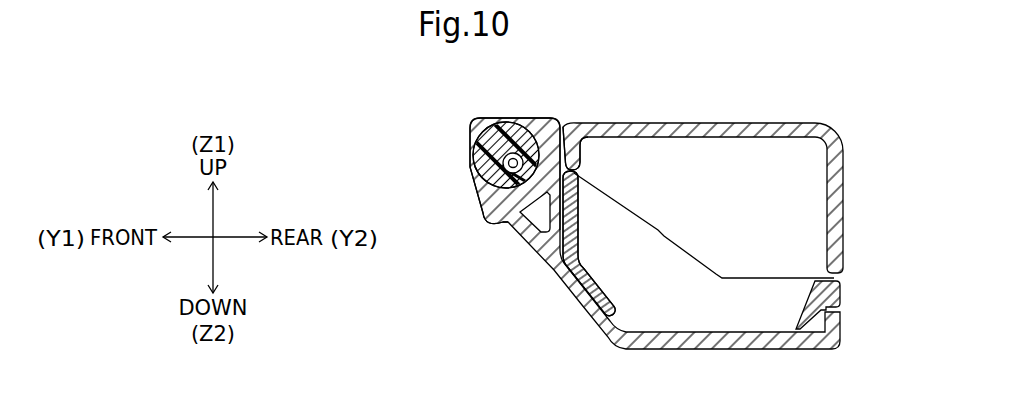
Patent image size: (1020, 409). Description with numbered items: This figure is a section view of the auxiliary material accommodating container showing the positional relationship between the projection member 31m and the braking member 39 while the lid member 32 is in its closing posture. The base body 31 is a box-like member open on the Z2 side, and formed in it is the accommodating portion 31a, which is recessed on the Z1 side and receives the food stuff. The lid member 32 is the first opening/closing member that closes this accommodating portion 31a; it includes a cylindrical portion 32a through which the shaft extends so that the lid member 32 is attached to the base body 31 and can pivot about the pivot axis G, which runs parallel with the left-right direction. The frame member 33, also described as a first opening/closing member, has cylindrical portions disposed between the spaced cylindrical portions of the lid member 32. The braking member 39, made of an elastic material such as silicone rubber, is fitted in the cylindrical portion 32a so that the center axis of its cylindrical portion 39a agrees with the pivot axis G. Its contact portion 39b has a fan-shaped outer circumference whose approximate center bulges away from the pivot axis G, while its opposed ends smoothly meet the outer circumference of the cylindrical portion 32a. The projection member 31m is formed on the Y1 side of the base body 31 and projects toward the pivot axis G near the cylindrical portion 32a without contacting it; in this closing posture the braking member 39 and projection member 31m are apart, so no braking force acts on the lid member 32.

The base body 31 is at (771, 122).
The accommodating portion 31a is at (757, 211).
The projection member 31m is at (529, 116).
The lid member 32 is at (841, 326).
The cylindrical portion 32a is at (479, 184).
The frame member 33 is at (841, 292).
The braking member 39 is at (466, 144).
The cylindrical portion 39a is at (517, 202).
The contact portion 39b is at (493, 118).
The pivot axis G is at (484, 189).